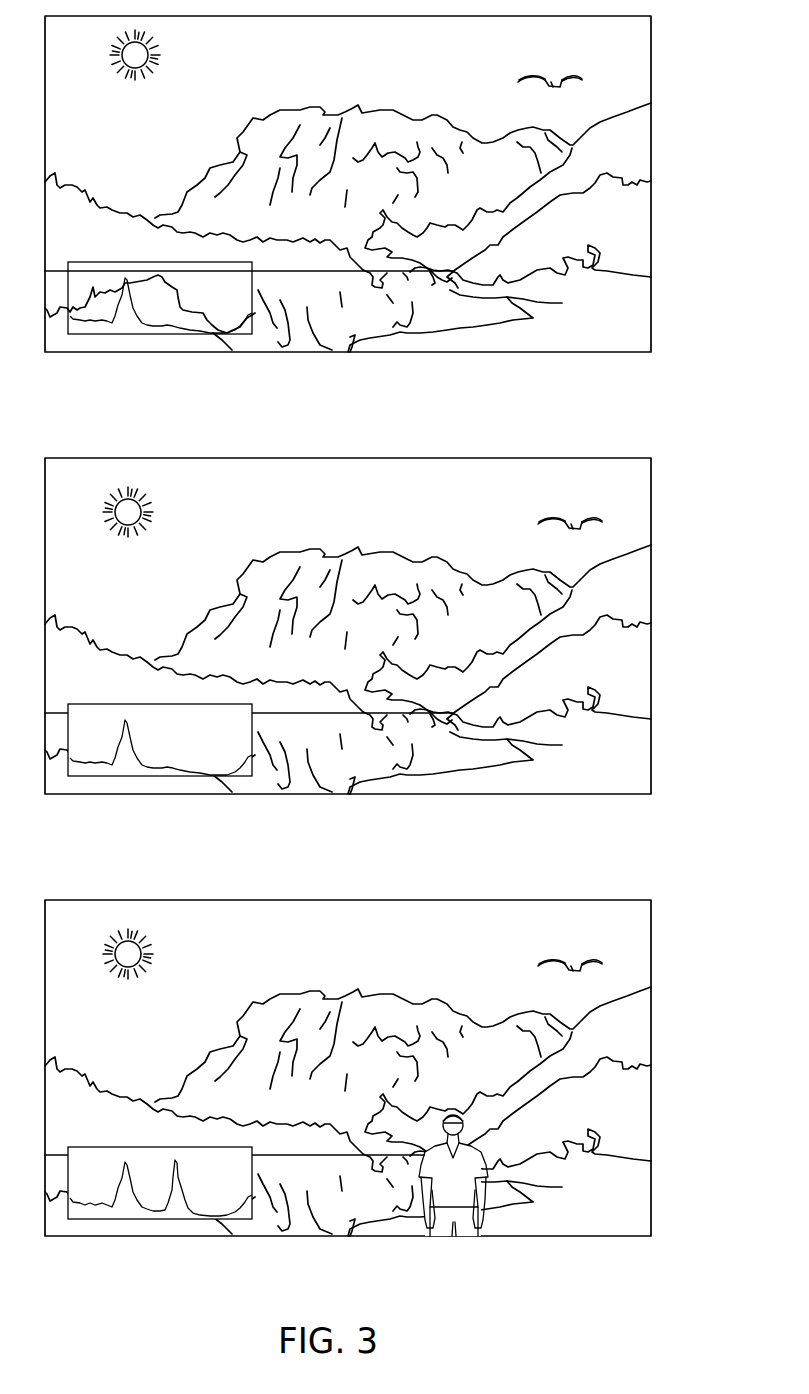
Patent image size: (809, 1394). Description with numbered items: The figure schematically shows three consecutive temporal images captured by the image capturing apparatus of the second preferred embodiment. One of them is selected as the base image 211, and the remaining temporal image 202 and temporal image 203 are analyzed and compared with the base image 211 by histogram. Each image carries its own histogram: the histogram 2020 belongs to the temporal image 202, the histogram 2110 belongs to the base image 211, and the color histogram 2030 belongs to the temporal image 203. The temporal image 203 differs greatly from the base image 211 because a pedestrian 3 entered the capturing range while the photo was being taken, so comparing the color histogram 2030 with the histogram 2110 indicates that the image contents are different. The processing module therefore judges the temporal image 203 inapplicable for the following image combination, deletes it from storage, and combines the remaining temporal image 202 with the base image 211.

The temporal image 202 is at (387, 210).
The histogram of temporal image 2020 is at (83, 329).
The base image 211 is at (387, 651).
The histogram of base image 2110 is at (83, 771).
The temporal image 203 is at (387, 1101).
The color histogram of temporal image 2030 is at (83, 1214).
The pedestrian 3 is at (445, 1232).